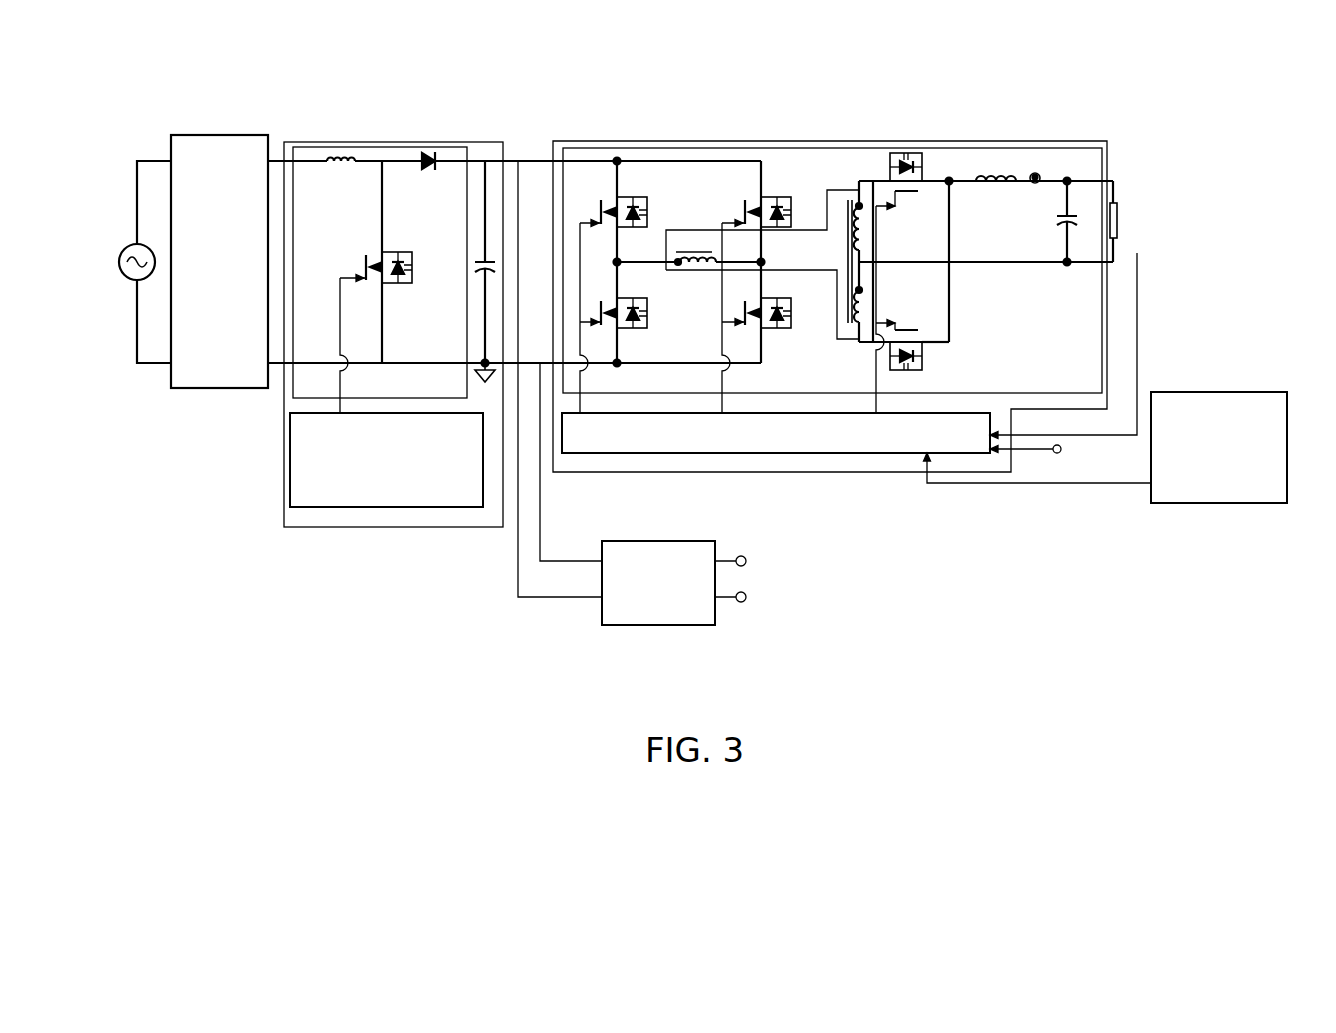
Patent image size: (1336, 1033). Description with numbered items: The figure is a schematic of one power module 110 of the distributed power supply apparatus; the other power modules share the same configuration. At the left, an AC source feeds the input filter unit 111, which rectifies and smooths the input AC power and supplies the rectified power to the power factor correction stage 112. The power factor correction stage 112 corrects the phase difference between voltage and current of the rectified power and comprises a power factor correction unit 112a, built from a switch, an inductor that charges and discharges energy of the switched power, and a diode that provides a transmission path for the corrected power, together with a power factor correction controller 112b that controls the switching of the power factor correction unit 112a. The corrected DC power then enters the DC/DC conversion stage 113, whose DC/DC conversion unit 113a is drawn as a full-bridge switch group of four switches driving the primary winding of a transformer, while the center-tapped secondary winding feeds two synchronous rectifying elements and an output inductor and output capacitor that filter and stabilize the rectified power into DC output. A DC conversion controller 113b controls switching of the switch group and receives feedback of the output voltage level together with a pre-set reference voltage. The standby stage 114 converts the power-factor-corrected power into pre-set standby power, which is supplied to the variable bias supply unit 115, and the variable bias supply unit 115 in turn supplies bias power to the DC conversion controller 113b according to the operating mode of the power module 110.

The first power module 110 is at (705, 43).
The input filter unit 111 is at (218, 135).
The power factor correction stage 112 is at (405, 142).
The power factor correction unit 112a is at (330, 147).
The power factor correction controller 112b is at (290, 433).
The DC/DC conversion stage 113 is at (668, 141).
The DC/DC conversion unit 113a is at (785, 147).
The DC conversion controller 113b is at (777, 453).
The standby stage 114 is at (672, 625).
The variable bias supply unit 115 is at (1203, 392).